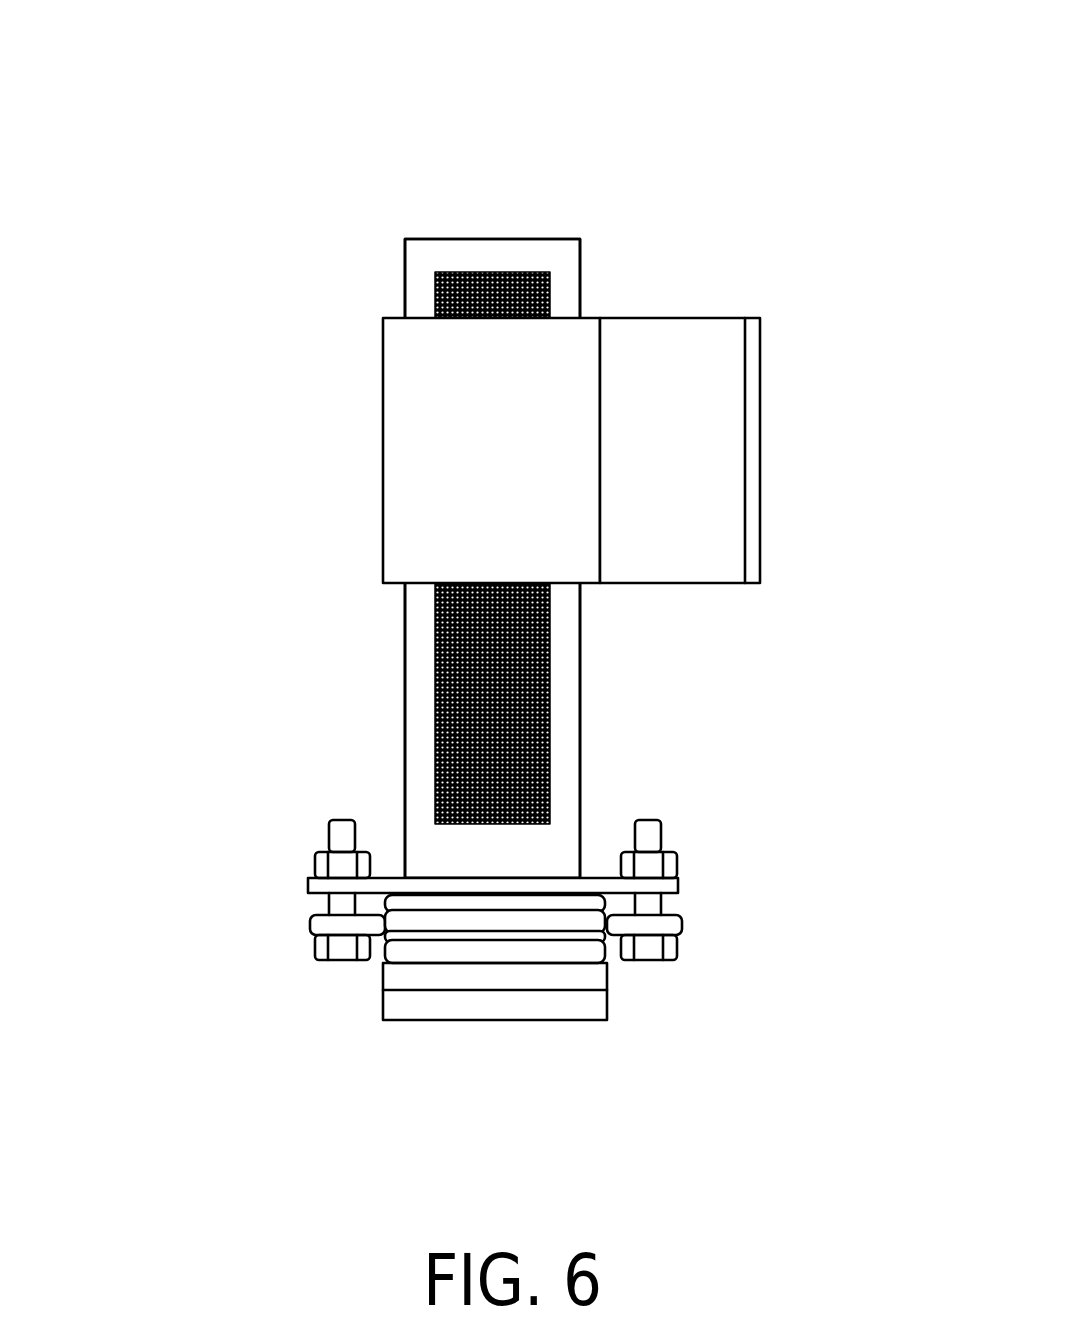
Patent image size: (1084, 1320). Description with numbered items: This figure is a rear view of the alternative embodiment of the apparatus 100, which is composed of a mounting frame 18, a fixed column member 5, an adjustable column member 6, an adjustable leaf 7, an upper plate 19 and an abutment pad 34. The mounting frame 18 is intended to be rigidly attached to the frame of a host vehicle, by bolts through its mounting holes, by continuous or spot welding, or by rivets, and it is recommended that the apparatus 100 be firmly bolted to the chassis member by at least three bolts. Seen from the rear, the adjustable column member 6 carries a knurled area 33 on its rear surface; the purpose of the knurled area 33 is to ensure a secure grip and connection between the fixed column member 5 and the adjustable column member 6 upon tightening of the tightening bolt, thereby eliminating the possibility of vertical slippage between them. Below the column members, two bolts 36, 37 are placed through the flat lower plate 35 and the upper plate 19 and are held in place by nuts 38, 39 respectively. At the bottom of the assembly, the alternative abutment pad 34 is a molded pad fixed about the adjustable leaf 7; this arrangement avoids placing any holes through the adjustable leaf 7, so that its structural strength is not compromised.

The apparatus 100 is at (431, 153).
The fixed column member 5 is at (433, 358).
The mounting frame 18 is at (690, 377).
The adjustable column member 6 is at (420, 658).
The knurled area 33 is at (527, 653).
The bolt 36 is at (342, 833).
The bolt 37 is at (655, 833).
The nut 38 is at (340, 863).
The nut 39 is at (648, 865).
The upper plate 19 is at (660, 883).
The flat lower plate 35 is at (650, 923).
The adjustable leaf 7 is at (425, 952).
The abutment pad 34 is at (423, 1003).